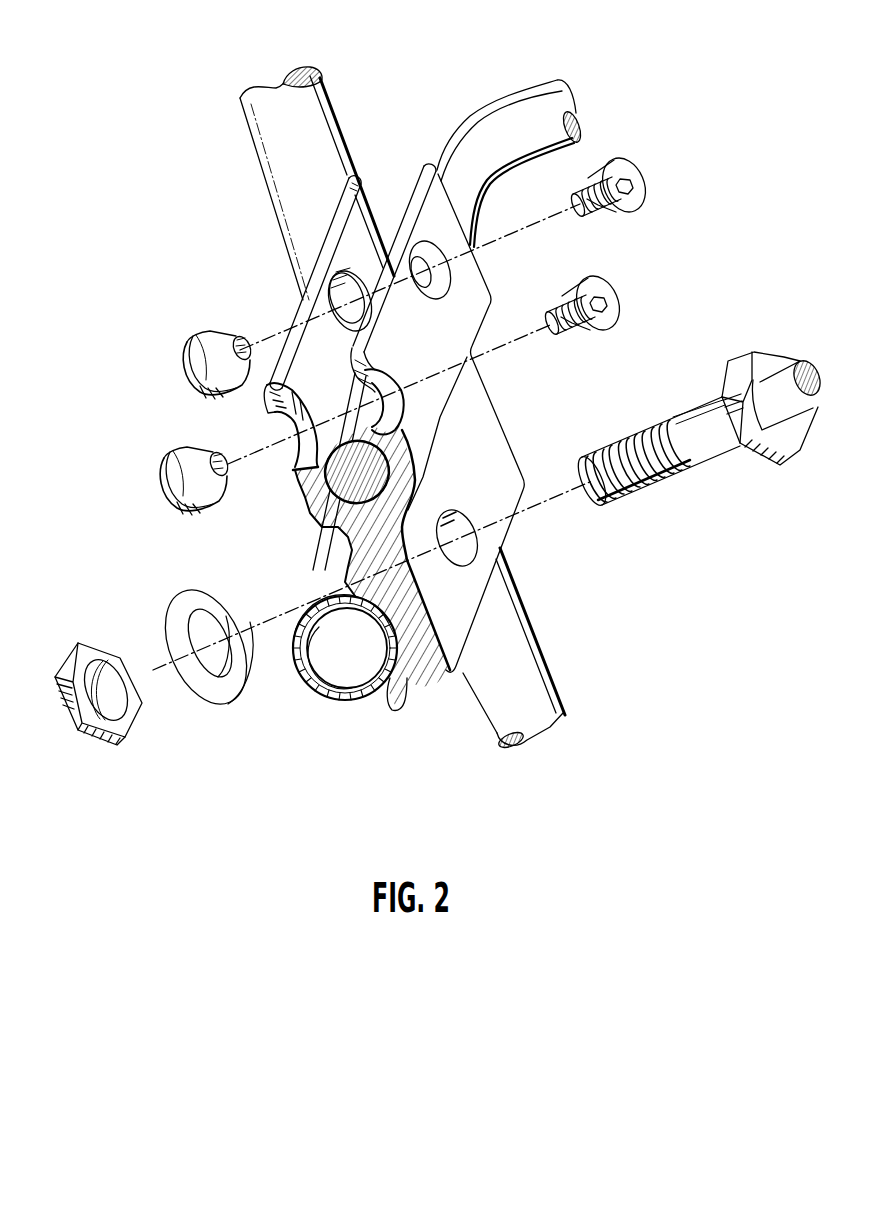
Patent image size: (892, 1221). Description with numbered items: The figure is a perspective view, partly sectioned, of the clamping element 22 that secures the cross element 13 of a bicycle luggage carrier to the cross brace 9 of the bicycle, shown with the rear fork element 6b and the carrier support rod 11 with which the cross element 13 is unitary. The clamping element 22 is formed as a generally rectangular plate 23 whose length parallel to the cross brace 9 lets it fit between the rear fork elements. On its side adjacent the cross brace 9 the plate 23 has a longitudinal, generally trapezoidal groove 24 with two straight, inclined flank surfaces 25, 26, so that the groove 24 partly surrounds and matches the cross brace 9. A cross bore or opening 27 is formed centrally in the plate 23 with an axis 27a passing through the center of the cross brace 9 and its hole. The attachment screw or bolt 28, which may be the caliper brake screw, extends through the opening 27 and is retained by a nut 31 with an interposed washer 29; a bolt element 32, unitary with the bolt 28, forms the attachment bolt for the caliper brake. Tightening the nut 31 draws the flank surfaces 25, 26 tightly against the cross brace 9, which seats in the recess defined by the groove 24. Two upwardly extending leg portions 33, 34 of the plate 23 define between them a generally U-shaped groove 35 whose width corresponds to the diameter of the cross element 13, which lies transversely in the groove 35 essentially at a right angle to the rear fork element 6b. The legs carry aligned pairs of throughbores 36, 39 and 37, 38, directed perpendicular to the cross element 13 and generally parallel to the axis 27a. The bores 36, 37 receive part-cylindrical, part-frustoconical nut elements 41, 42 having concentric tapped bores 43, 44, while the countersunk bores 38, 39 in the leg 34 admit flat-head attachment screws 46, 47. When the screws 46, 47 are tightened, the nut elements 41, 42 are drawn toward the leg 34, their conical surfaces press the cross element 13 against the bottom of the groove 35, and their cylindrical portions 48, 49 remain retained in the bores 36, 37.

The rear fork element 6b is at (325, 117).
The carrier support rod 11 is at (553, 112).
The clamping element 22 is at (174, 156).
The leg portion 33 is at (327, 272).
The leg portion 34 is at (430, 157).
The groove 35 is at (316, 334).
The throughbore 36 is at (303, 442).
The throughbore 37 is at (340, 270).
The throughbore 38 is at (427, 240).
The throughbore 39 is at (441, 418).
The cross element 13 is at (350, 483).
The cross brace 9 is at (310, 690).
The flank surface 25 is at (340, 597).
The flank surface 26 is at (403, 690).
The trapezoidal groove 24 is at (430, 687).
The plate 23 is at (455, 627).
The cross bore 27 is at (450, 513).
The axis 27a is at (548, 500).
The attachment screw 28 is at (658, 427).
The bolt element 32 is at (777, 387).
The washer 29 is at (193, 600).
The nut 31 is at (73, 645).
The nut element 41 is at (152, 492).
The nut element 42 is at (170, 371).
The tapped bore 43 is at (220, 473).
The tapped bore 44 is at (253, 357).
The attachment screw 46 is at (562, 293).
The attachment screw 47 is at (587, 173).
The cylindrical portion 48 is at (193, 490).
The cylindrical portion 49 is at (217, 363).